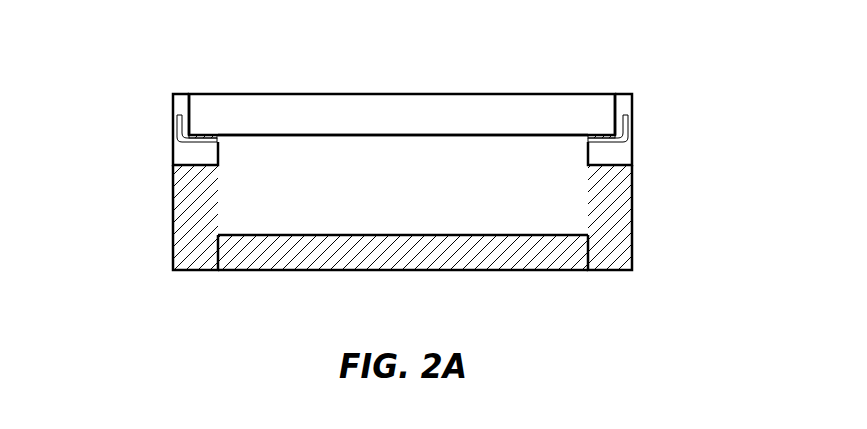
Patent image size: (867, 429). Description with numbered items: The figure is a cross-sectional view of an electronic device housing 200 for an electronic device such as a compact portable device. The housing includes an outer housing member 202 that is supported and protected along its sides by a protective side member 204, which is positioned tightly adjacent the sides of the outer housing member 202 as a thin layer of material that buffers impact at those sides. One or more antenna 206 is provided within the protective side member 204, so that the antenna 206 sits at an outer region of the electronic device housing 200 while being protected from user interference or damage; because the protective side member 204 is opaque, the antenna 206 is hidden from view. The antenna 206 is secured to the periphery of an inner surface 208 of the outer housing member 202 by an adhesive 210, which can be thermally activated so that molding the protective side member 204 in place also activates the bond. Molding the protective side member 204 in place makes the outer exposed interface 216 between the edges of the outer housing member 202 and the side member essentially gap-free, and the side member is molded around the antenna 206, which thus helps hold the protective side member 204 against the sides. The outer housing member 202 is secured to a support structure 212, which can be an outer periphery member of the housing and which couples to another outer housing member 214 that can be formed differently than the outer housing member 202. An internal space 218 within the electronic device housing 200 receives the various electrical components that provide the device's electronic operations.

The electronic device housing 200 is at (140, 42).
The outer housing member 202 is at (384, 127).
The protective side member 204 is at (174, 150).
The antenna 206 is at (180, 125).
The inner surface 208 is at (462, 146).
The adhesive 210 is at (218, 140).
The support structure 212 is at (173, 212).
The another outer housing member 214 is at (316, 253).
The outer exposed interface 216 is at (190, 80).
The internal space 218 is at (345, 197).